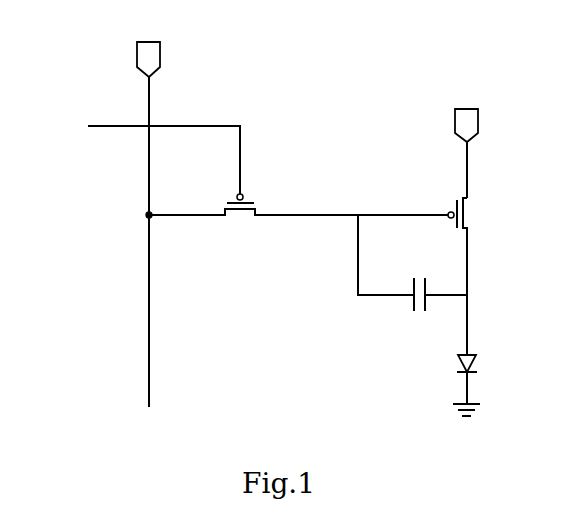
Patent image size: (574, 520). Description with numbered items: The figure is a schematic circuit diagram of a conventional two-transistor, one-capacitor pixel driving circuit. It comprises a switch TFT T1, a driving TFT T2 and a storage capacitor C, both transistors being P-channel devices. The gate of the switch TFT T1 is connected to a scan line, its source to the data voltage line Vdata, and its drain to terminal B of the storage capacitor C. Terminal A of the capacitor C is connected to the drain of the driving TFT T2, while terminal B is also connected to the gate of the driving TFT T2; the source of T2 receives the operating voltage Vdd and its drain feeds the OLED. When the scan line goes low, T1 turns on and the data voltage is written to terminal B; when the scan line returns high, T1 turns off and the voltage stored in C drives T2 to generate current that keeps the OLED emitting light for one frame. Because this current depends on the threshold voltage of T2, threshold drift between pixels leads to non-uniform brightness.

The data voltage line Vdata is at (149, 215).
The switch TFT T1 is at (297, 229).
The driving TFT T2 is at (487, 276).
The operating voltage Vdd is at (466, 144).
The storage capacitor C is at (412, 280).
The terminal A of the capacitor A is at (444, 285).
The terminal B of the capacitor B is at (392, 286).
The element OLED is at (485, 385).